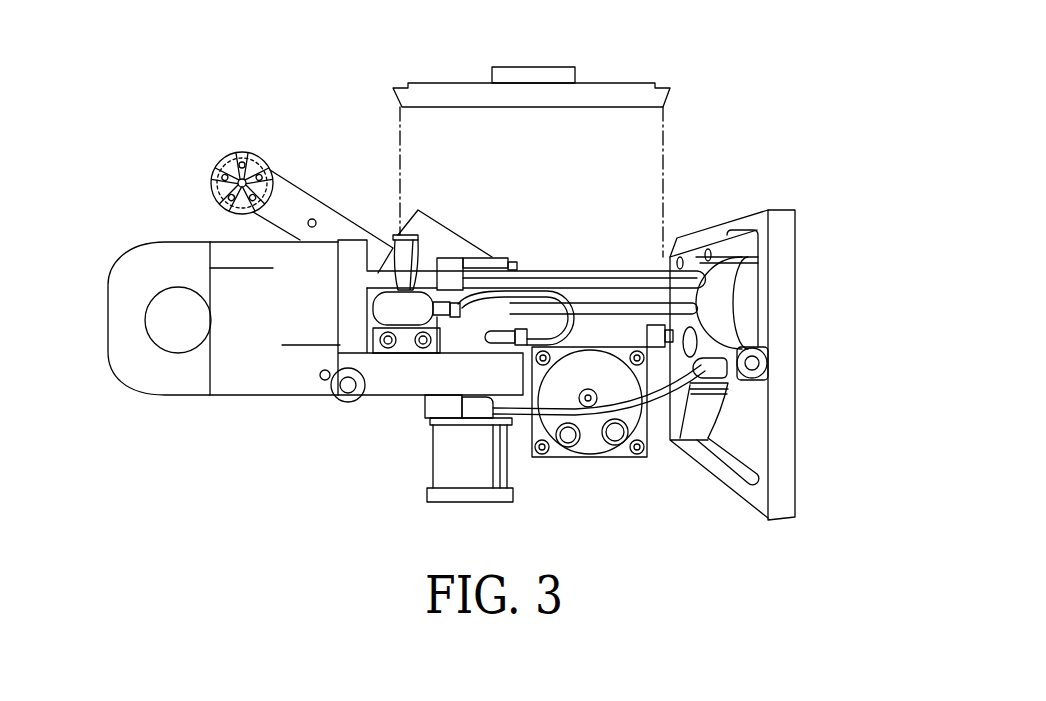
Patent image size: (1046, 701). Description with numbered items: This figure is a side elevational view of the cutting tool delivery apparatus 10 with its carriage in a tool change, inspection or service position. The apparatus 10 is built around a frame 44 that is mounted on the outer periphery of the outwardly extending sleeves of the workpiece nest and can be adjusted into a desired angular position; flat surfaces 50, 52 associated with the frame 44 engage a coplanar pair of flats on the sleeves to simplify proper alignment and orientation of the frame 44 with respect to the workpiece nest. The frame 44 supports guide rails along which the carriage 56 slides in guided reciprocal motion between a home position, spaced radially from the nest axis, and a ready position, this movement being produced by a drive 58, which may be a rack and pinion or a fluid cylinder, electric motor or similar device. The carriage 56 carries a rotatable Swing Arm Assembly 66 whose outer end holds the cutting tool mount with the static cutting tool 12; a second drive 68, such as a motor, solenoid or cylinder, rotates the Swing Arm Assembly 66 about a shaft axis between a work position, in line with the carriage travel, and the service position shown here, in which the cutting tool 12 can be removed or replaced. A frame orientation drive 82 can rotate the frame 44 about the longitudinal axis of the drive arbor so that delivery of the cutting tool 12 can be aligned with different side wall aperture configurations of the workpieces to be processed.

The cutting tool delivery apparatus 10 is at (724, 67).
The cutting tool 12 is at (212, 182).
The frame 44 is at (812, 203).
The flat surface 50 is at (276, 321).
The flat surface 52 is at (210, 320).
The carriage 56 is at (511, 245).
The drive 58 is at (625, 458).
The Swing Arm Assembly 66 is at (320, 176).
The second drive 68 is at (377, 312).
The frame orientation drive 82 is at (432, 455).